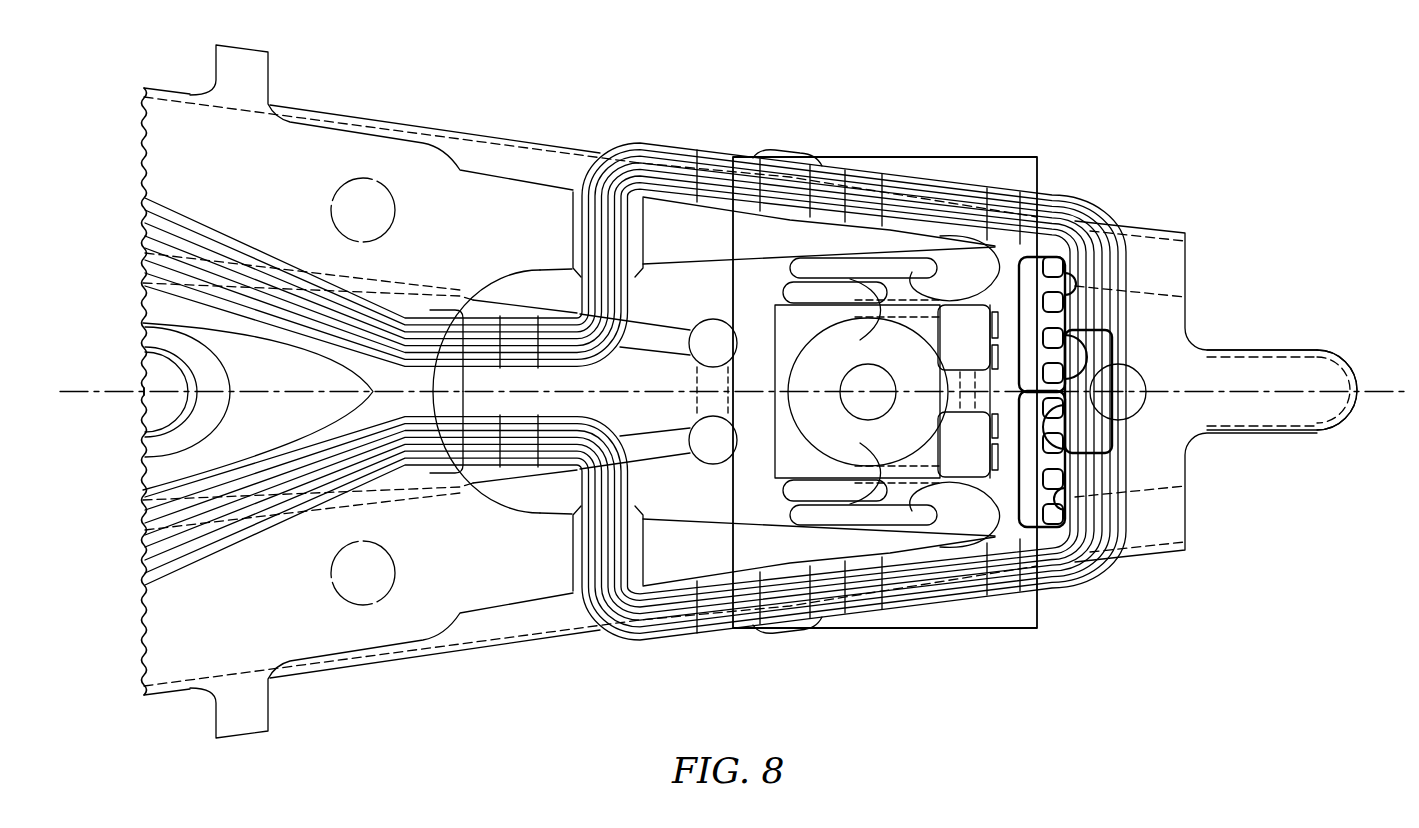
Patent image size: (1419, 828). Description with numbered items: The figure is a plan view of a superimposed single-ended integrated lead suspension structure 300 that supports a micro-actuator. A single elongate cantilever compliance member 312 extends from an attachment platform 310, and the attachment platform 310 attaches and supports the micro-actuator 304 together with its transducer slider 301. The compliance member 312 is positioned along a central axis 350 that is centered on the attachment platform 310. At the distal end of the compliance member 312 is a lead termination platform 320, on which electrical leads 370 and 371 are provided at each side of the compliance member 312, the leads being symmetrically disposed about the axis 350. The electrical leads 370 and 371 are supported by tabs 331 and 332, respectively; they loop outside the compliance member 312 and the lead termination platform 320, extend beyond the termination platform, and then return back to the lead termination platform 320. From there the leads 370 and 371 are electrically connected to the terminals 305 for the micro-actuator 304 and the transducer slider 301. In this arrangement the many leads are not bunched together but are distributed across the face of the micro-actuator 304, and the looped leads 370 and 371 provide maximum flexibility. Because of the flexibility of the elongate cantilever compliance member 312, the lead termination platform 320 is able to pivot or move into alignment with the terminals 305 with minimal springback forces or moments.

The single-ended integrated lead suspension structure 300 is at (732, 371).
The transducer slider 301 is at (1013, 268).
The micro-actuator 304 is at (992, 157).
The terminals 305 is at (1063, 514).
The attachment platform 310 is at (945, 432).
The elongate cantilever compliance member 312 is at (970, 372).
The lead termination platform 320 is at (1120, 400).
The tab 331 is at (793, 637).
The tab 332 is at (797, 147).
The axis 350 is at (1388, 400).
The electrical lead 370 is at (1117, 543).
The electrical lead 371 is at (1117, 238).